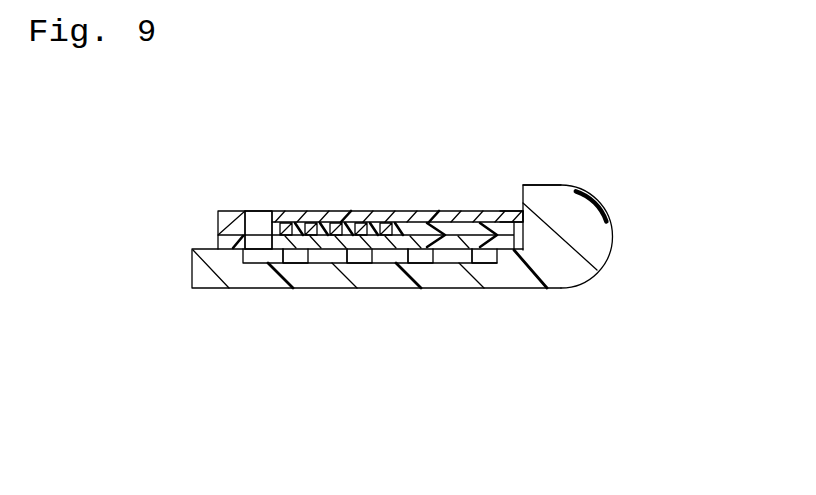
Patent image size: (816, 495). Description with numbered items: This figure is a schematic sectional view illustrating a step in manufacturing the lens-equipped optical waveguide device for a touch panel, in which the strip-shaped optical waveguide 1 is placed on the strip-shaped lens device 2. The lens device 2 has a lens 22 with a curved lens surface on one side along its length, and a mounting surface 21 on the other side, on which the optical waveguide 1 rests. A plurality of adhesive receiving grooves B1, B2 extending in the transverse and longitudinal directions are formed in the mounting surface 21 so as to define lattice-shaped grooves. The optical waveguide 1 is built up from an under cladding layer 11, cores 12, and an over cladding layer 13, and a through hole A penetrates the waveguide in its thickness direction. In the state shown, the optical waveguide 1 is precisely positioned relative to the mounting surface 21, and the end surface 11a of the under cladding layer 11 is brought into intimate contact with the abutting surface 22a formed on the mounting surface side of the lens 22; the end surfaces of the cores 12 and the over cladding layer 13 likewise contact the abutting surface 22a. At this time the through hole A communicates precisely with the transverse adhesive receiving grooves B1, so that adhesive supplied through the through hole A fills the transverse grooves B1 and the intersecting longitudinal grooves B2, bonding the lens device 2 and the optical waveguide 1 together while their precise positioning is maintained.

The optical waveguide 1 is at (370, 164).
The under cladding layer 11 is at (332, 219).
The end surface 11a is at (489, 178).
The core 12 is at (423, 217).
The over cladding layer 13 is at (453, 217).
The lens device 2 is at (585, 185).
The mounting surface 21 is at (202, 249).
The lens 22 is at (558, 192).
The abutting surface 22a is at (522, 192).
The through hole A is at (256, 217).
The transverse adhesive receiving groove B1 is at (387, 252).
The longitudinal adhesive receiving groove B2 is at (390, 302).